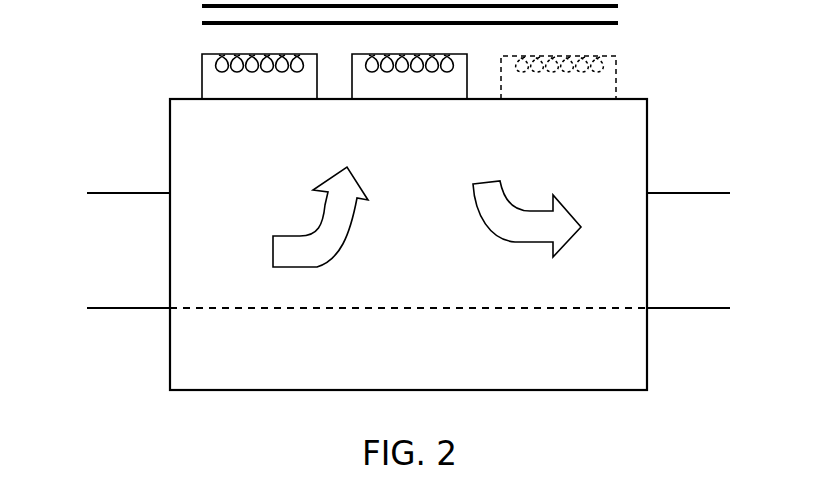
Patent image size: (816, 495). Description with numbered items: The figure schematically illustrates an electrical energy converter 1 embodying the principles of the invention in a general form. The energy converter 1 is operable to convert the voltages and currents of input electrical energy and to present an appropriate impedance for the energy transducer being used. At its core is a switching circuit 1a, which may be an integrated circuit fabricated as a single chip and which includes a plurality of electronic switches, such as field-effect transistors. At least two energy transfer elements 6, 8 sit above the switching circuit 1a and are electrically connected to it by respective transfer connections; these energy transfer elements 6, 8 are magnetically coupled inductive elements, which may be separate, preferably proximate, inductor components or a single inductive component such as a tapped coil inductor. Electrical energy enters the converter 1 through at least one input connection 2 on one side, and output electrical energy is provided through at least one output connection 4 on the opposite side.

The electrical energy converter 1 is at (78, 48).
The switching circuit 1a is at (408, 244).
The input connection 2 is at (88, 177).
The output connection 4 is at (733, 177).
The energy transfer element 6 is at (259, 64).
The energy transfer element 8 is at (409, 64).